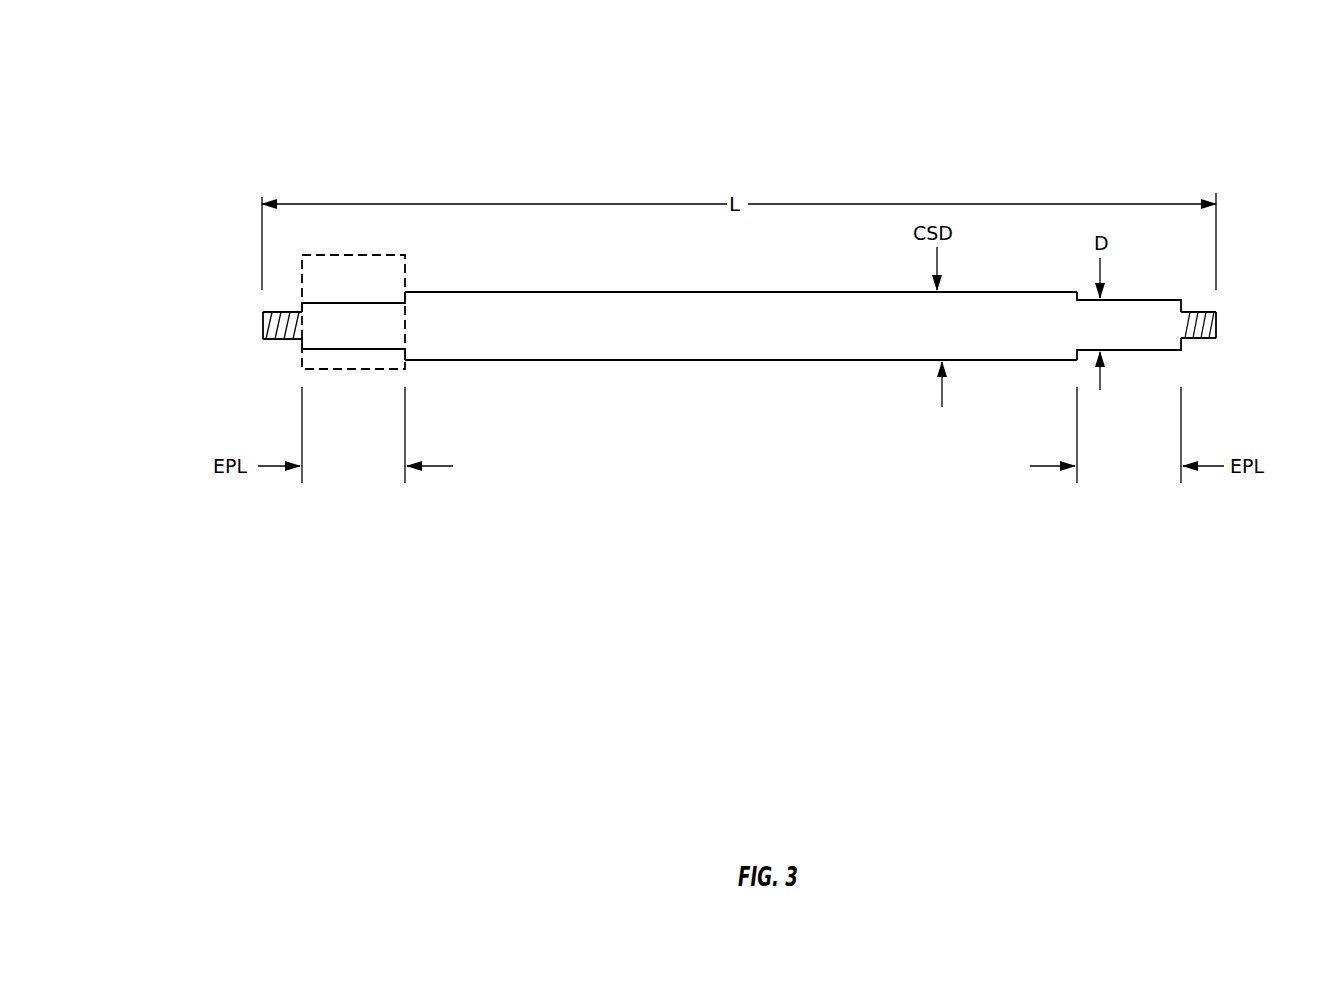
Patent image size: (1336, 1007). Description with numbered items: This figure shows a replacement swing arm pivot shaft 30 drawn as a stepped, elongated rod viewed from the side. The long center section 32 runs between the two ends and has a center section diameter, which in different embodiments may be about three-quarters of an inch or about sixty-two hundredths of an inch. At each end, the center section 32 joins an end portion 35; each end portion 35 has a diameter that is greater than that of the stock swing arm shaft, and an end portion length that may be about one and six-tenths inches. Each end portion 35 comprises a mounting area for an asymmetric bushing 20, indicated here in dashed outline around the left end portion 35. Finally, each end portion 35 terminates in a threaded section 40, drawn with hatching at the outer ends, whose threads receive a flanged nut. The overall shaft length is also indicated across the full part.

The replacement swing arm pivot shaft 30 is at (637, 98).
The center section 32 is at (1077, 427).
The end portion 35 is at (376, 325).
The threaded section 40 is at (263, 312).
The asymmetric bushing 20 is at (352, 285).